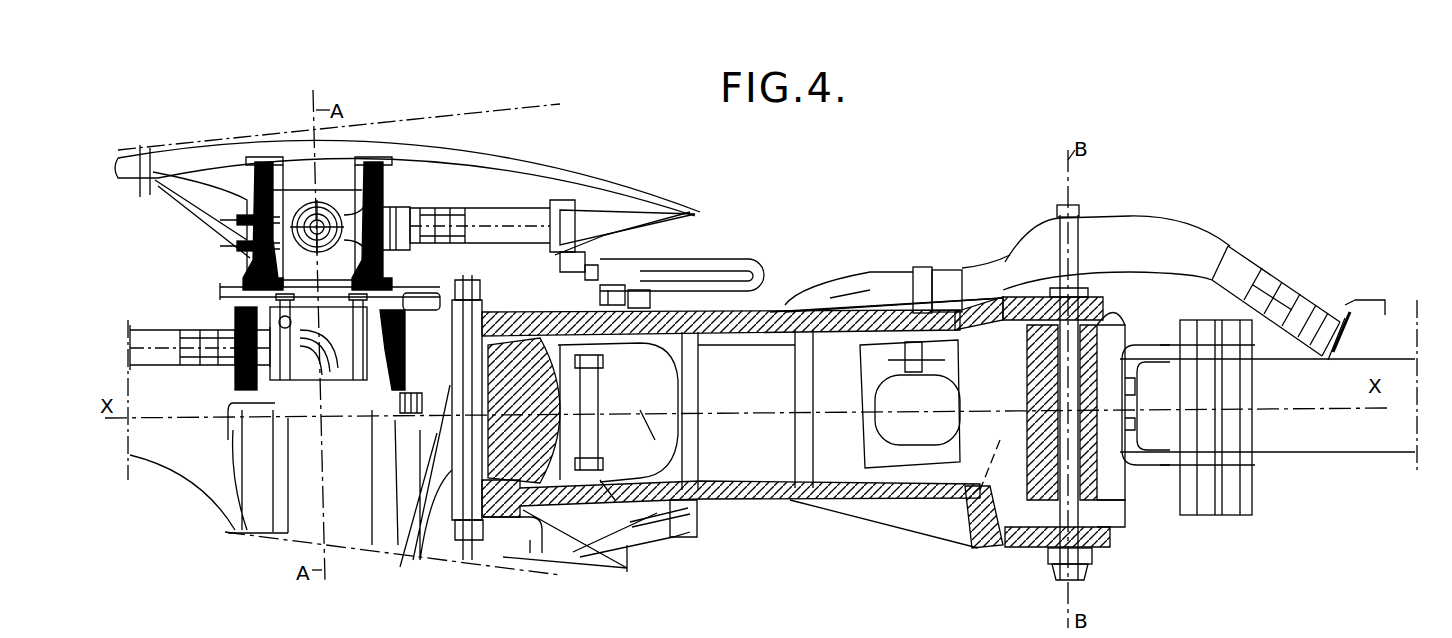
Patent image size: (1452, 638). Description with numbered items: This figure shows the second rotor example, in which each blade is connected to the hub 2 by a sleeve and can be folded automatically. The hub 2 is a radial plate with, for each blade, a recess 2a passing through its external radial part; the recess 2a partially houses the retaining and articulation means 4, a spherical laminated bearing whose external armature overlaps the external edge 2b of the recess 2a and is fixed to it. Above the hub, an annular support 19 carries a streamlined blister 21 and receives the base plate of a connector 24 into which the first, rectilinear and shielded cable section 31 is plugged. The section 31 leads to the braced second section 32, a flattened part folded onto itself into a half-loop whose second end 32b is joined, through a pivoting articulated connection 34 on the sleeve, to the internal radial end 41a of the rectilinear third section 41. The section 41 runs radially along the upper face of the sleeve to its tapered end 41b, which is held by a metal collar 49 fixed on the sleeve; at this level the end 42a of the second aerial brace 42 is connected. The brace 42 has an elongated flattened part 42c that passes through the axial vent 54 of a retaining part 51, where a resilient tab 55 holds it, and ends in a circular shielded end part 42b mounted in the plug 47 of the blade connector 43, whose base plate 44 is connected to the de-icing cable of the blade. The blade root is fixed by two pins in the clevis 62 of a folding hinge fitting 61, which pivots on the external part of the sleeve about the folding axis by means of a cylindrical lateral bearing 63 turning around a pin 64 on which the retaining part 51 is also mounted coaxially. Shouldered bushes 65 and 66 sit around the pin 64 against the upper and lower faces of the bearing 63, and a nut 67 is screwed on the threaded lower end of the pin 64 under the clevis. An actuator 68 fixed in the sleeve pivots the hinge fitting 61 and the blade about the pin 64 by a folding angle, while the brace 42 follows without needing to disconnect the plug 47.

The hub 2 is at (228, 460).
The recess 2a is at (420, 540).
The external edge 2b is at (620, 425).
The retaining and articulation means 4 is at (543, 460).
The annular support 19 is at (253, 263).
The streamlined blister 21 is at (237, 155).
The connector 24 is at (410, 195).
The first section 31 is at (508, 215).
The second section 32 is at (745, 260).
The second end 32b is at (618, 300).
The pivoting articulated connection 34 is at (588, 280).
The third cable section 41 is at (788, 306).
The internal radial end 41a is at (655, 300).
The tapered section connector 41b is at (885, 295).
The second aerial brace 42 is at (1241, 242).
The end 42a is at (948, 287).
The end part 42b is at (1300, 300).
The elongated part 42c is at (1118, 242).
The connector 43 is at (1336, 296).
The base plate 44 is at (1352, 330).
The plug 47 is at (1322, 310).
The metal collar 49 is at (918, 297).
The retaining part 51 is at (1079, 205).
The axial vent 54 is at (1052, 290).
The resilient tab 55 is at (1060, 212).
The folding hinge fitting 61 is at (1105, 325).
The clevis 62 is at (1240, 500).
The cylindrical and lateral bearing 63 is at (1028, 297).
The pin 64 is at (1060, 556).
The shouldered bush 65 is at (1100, 322).
The shouldered bush 66 is at (1105, 530).
The nut 67 is at (1090, 565).
The actuator 68 is at (980, 490).